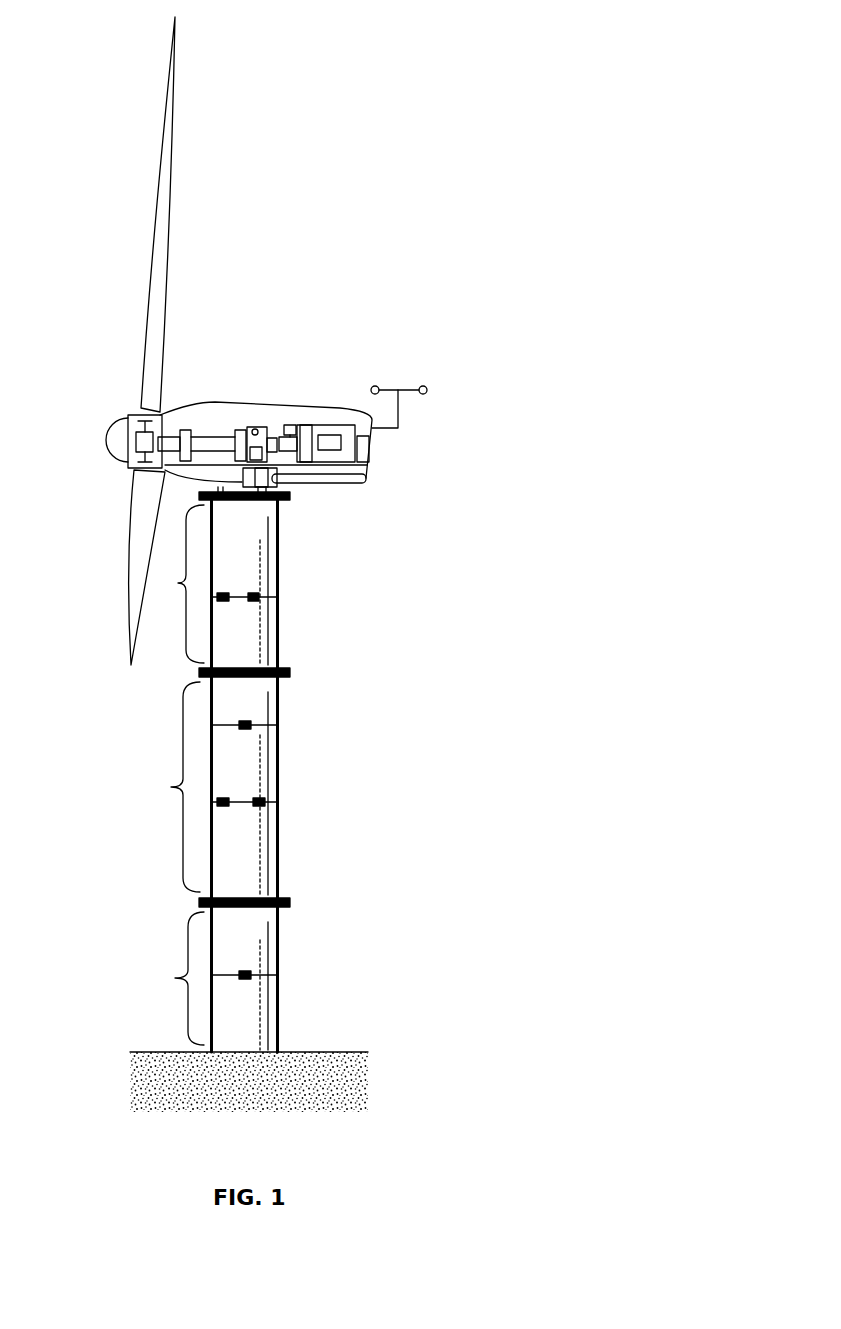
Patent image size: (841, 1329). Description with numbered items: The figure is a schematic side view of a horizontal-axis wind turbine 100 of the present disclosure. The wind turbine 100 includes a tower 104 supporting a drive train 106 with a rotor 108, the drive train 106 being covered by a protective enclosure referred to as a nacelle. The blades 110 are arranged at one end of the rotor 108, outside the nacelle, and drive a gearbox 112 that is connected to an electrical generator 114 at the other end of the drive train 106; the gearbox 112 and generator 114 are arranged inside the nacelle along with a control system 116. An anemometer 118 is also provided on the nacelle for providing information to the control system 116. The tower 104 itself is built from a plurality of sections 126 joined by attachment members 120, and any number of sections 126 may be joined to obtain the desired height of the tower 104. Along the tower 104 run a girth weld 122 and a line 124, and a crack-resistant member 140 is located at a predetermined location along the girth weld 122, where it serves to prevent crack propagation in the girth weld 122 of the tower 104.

The wind turbine 100 is at (413, 225).
The tower 104 is at (296, 571).
The drive train 106 is at (420, 446).
The rotor 108 is at (207, 445).
The blades 110 is at (158, 287).
The gearbox 112 is at (255, 428).
The electrical generator 114 is at (322, 433).
The control system 116 is at (288, 425).
The anemometer 118 is at (408, 388).
The attachment members 120 is at (290, 497).
The girth weld 122 is at (262, 599).
The cable 124 is at (278, 528).
The sections 126 is at (178, 583).
The crack-resistant member 140 is at (223, 592).